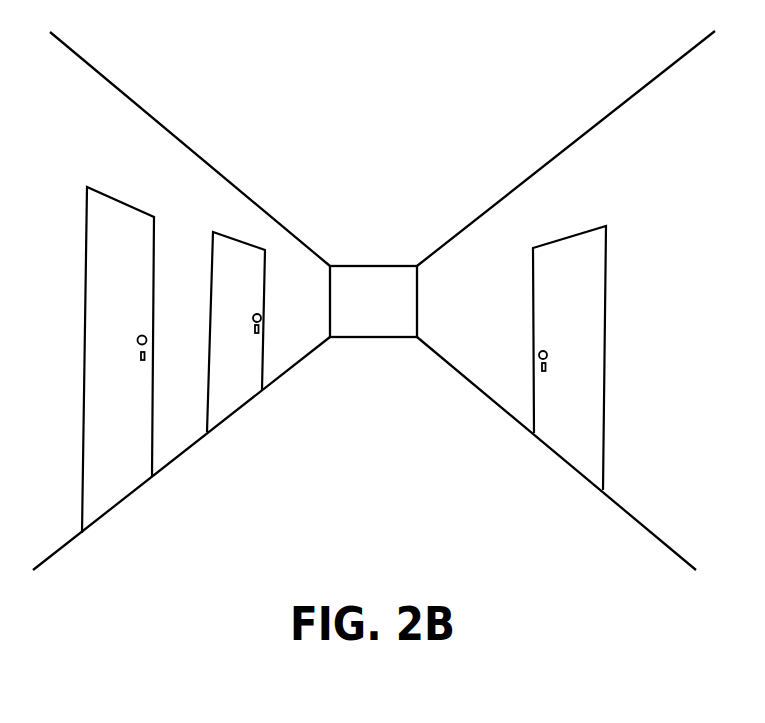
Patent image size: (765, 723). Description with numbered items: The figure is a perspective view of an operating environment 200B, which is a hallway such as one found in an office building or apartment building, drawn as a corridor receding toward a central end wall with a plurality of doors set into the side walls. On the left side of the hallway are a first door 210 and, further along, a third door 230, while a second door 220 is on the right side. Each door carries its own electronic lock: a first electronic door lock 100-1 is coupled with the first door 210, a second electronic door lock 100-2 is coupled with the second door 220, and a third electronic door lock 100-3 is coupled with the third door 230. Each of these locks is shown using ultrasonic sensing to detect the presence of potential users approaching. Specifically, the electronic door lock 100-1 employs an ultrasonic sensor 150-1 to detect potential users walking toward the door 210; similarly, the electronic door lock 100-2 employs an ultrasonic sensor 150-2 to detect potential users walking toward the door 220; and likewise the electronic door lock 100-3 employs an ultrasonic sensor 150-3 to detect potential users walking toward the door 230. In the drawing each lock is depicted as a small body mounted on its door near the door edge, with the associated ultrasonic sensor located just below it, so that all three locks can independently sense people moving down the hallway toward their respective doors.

The operating environment 200B is at (657, 61).
The first door 210 is at (143, 220).
The second door 220 is at (562, 255).
The third door 230 is at (222, 248).
The first electronic door lock 100-1 is at (147, 333).
The second electronic door lock 100-2 is at (538, 350).
The third electronic door lock 100-3 is at (258, 312).
The ultrasonic sensor 150-1 is at (170, 350).
The ultrasonic sensor 150-2 is at (538, 365).
The ultrasonic sensor 150-3 is at (285, 323).